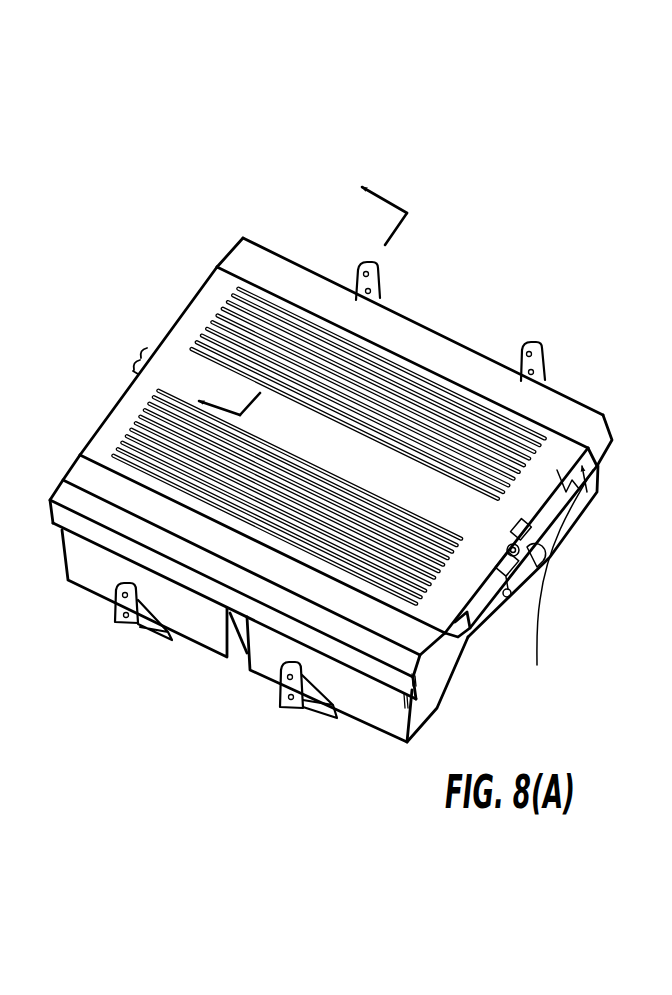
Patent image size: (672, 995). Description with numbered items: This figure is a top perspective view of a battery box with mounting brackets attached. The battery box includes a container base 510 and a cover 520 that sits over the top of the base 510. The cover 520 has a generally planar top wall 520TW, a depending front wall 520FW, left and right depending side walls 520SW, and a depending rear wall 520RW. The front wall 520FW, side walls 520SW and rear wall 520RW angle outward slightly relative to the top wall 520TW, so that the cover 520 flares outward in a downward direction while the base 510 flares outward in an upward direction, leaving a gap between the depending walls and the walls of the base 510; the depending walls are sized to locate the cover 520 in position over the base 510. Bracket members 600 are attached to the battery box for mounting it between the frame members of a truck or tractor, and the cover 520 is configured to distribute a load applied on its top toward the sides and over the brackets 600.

The container base 510 is at (83, 585).
The cover 520 is at (278, 293).
The depending rear wall 520RW is at (193, 292).
The top wall 520TW is at (357, 453).
The depending front wall 520FW is at (450, 657).
The depending side wall 520SW is at (593, 400).
The bracket member 600 is at (527, 337).